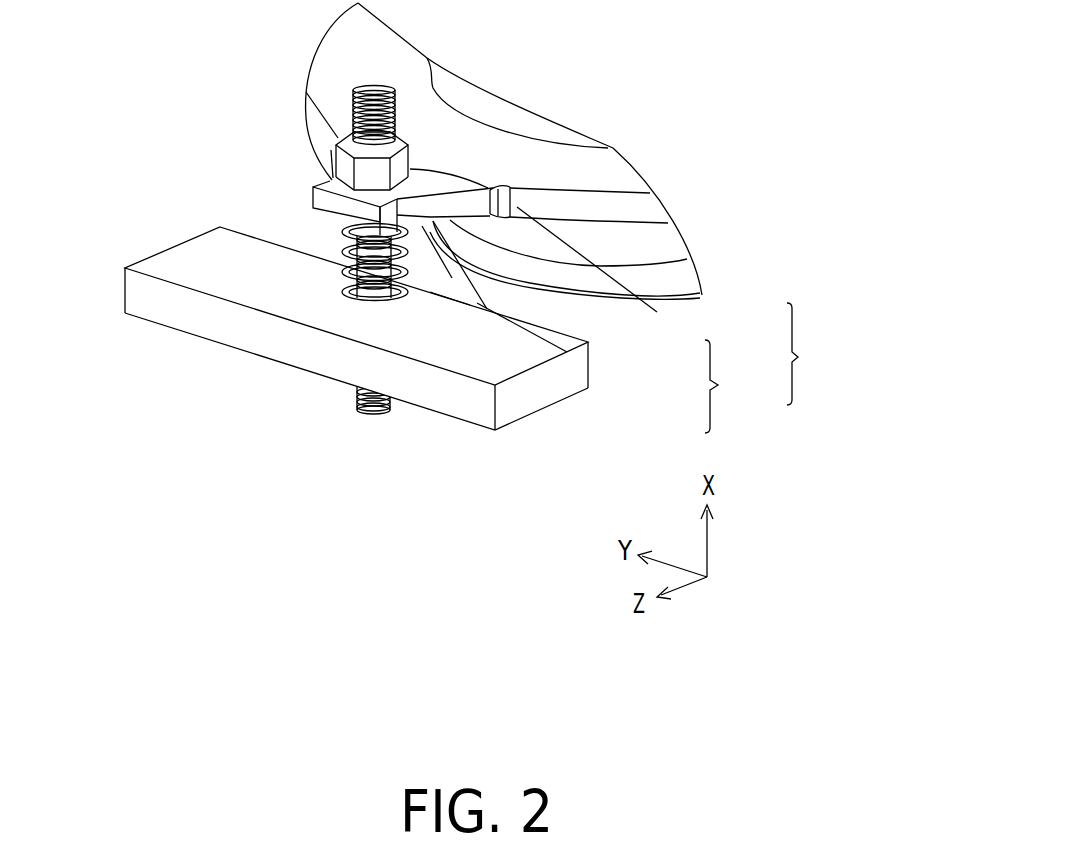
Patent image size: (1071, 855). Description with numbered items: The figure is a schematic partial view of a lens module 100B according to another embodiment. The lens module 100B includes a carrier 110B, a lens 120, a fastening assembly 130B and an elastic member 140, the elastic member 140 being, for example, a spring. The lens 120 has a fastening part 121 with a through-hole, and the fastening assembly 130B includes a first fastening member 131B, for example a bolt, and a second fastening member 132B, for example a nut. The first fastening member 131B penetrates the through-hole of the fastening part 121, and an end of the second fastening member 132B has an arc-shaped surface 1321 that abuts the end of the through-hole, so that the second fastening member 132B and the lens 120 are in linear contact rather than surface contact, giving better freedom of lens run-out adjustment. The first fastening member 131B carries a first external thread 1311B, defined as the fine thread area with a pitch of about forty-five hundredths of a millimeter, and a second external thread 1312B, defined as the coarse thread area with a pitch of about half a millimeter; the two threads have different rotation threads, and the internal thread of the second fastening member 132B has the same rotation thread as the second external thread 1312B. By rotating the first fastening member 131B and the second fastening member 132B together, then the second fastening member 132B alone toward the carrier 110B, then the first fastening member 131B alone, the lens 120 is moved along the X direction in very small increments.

The lens module 100B is at (460, 531).
The carrier 110B is at (278, 295).
The lens 120 is at (320, 57).
The fastening part 121 is at (338, 167).
The fastening assembly 130B is at (820, 354).
The first fastening member 131B is at (738, 386).
The first external thread 1311B is at (390, 408).
The second external thread 1312B is at (590, 347).
The arc-shaped surface 1321 is at (312, 193).
The second fastening member 132B is at (612, 285).
The elastic member 140 is at (340, 245).